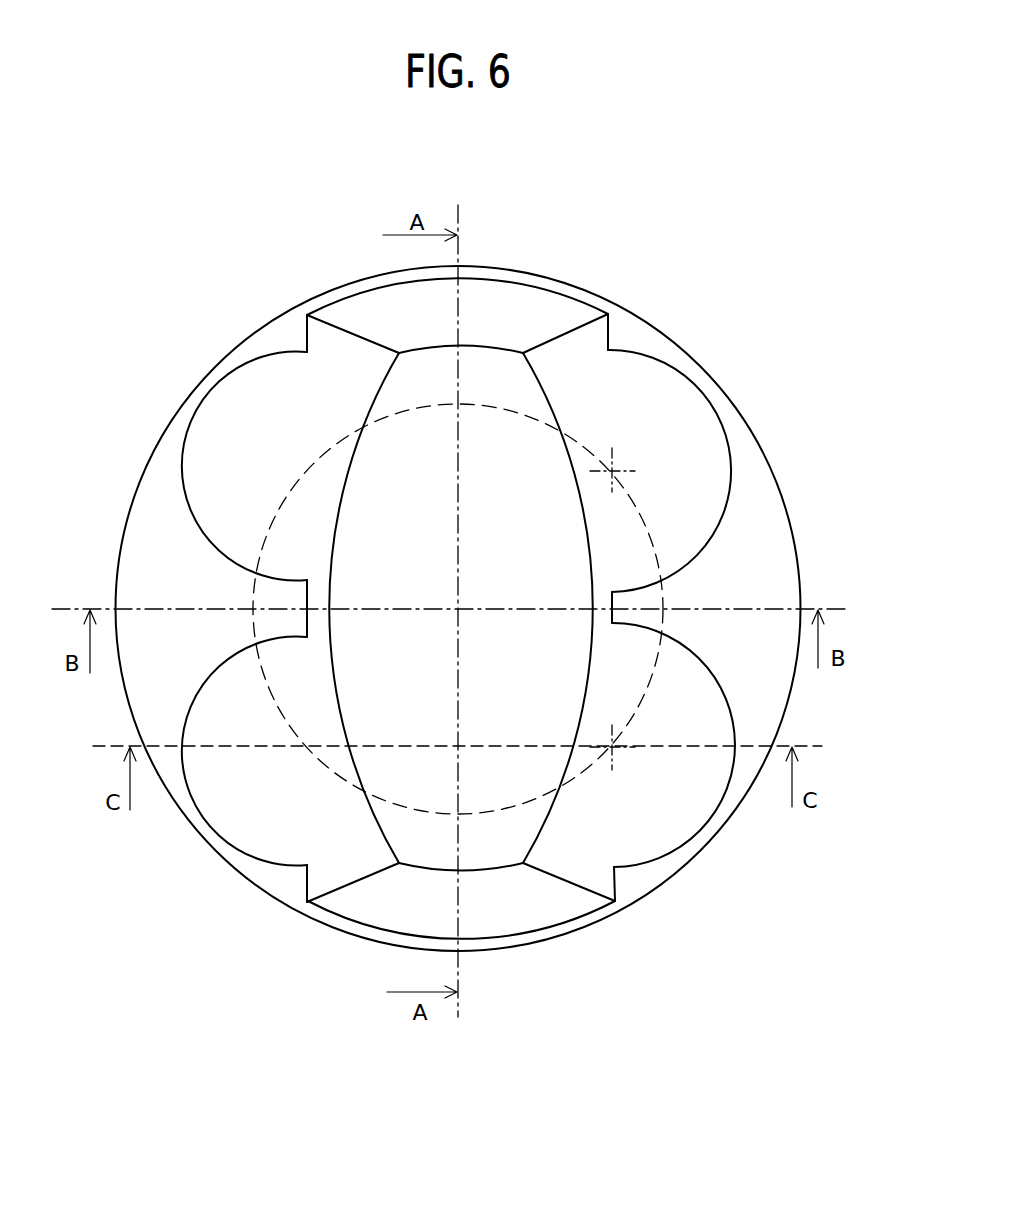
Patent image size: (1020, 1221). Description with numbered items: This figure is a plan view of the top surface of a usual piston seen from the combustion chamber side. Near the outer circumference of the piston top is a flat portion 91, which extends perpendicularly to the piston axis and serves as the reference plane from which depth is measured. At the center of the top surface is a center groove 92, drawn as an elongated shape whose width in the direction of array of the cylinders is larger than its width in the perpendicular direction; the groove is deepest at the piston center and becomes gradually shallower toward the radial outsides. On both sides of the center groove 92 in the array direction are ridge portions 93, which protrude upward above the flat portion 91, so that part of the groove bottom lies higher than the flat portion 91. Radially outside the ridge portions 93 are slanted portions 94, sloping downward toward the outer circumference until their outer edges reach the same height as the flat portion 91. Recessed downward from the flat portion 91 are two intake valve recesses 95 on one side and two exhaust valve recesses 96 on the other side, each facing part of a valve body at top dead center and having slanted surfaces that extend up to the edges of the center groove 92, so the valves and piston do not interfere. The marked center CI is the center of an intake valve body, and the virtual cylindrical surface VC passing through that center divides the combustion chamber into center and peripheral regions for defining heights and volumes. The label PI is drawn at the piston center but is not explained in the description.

The flat portion 91 is at (757, 565).
The center groove 92 is at (488, 848).
The ridge portion 93 is at (483, 347).
The slanted portion 94 is at (523, 325).
The intake valve recess 95 is at (684, 437).
The exhaust valve recess 96 is at (218, 440).
The pitch circle PI is at (461, 609).
The center of valve body of intake valve CI is at (612, 468).
The virtual cylindrical surface VC is at (338, 777).